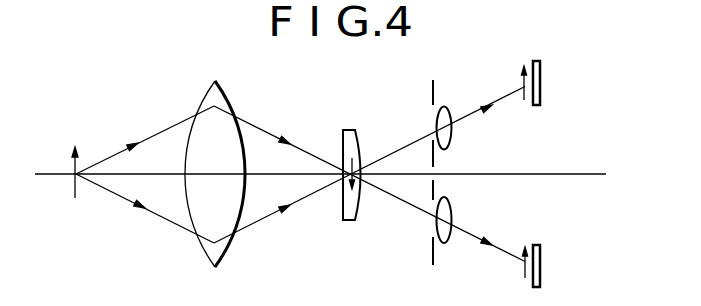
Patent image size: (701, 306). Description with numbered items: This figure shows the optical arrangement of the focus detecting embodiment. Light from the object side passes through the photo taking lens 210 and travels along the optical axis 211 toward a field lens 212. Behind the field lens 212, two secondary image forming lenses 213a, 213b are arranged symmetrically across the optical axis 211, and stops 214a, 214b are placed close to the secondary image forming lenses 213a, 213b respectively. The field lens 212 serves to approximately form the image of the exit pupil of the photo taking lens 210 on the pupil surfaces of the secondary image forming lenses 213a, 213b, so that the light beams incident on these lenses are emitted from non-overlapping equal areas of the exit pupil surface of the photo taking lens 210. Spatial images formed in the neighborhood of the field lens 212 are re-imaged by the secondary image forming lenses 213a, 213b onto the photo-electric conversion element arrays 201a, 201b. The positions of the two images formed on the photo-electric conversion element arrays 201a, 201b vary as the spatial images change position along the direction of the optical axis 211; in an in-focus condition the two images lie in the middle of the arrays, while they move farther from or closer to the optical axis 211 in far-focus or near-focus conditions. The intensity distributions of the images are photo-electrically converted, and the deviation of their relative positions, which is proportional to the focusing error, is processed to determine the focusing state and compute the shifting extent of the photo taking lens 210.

The photo-electric conversion element array 201a is at (541, 72).
The photo-electric conversion element array 201b is at (541, 259).
The photo taking lens 210 is at (233, 96).
The optical axis 211 is at (52, 172).
The field lens 212 is at (346, 128).
The secondary image forming lens 213a is at (449, 105).
The secondary image forming lens 213b is at (450, 242).
The stop 214a is at (431, 92).
The stop 214b is at (435, 184).